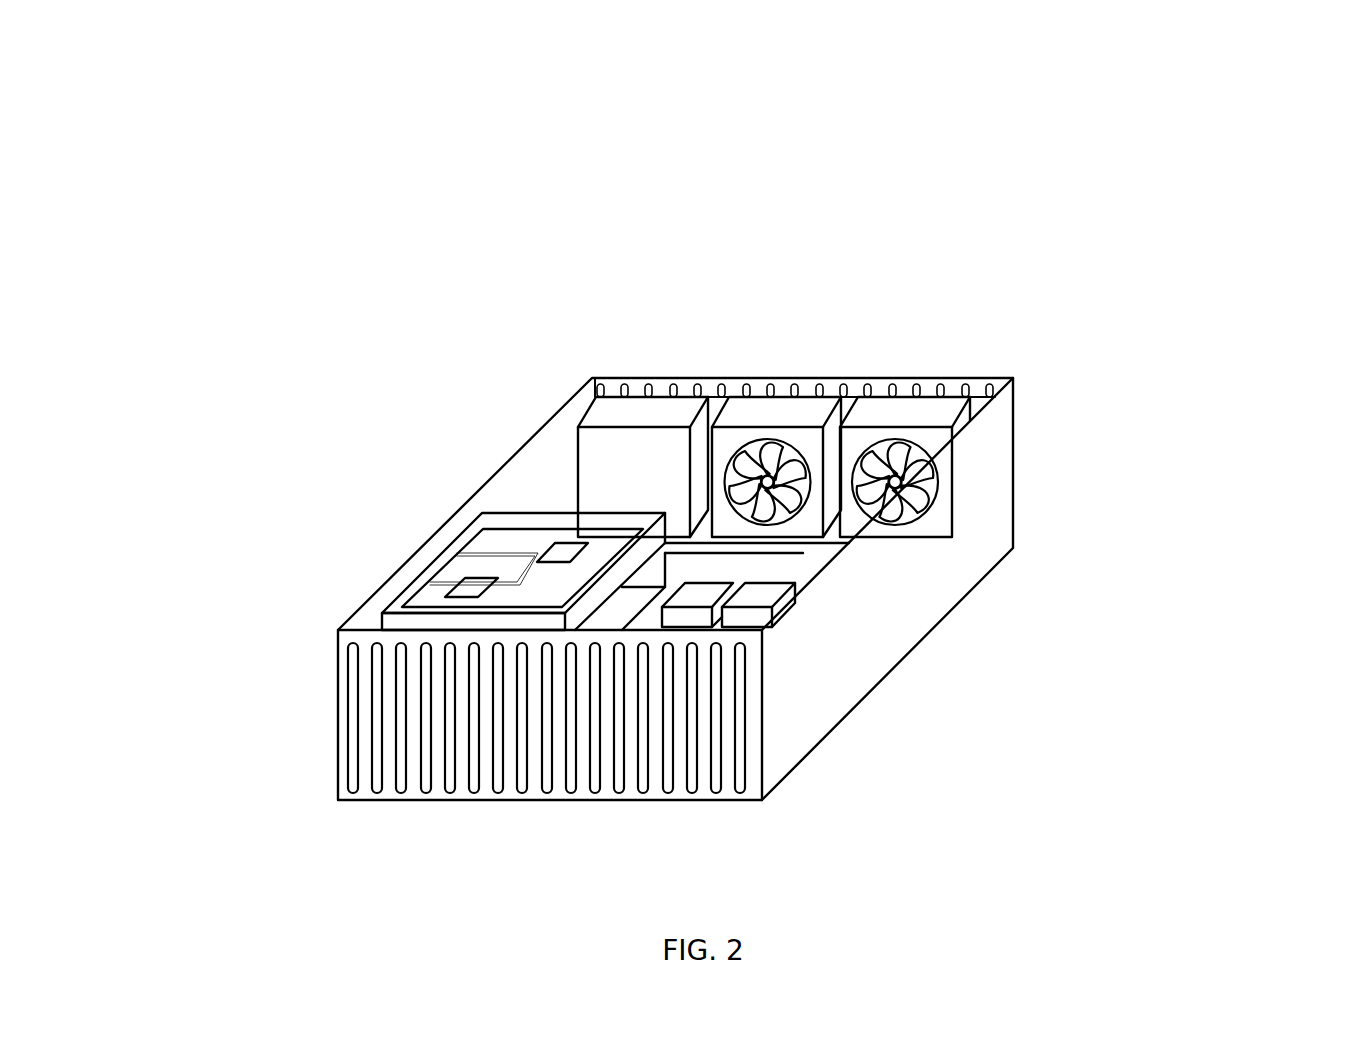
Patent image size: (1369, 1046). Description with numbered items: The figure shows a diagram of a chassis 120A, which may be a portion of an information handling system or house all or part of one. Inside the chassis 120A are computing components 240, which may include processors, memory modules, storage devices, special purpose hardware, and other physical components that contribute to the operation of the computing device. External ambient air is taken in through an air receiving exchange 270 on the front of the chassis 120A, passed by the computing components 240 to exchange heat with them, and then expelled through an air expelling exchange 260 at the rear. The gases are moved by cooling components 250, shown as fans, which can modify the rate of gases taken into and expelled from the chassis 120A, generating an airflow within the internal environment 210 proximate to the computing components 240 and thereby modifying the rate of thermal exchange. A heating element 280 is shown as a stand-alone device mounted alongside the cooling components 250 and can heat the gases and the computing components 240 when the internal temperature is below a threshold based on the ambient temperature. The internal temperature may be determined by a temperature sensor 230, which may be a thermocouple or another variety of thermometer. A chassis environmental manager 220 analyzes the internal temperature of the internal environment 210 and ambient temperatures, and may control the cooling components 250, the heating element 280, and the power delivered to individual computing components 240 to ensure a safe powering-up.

The chassis 120A is at (215, 138).
The internal environment 210 is at (768, 565).
The chassis environmental manager 220 is at (789, 600).
The temperature sensor 230 is at (699, 589).
The computing components 240 is at (540, 544).
The cooling components 250 is at (919, 406).
The air expelling exchange 260 is at (978, 380).
The air receiving exchange 270 is at (338, 807).
The heating element 280 is at (641, 408).